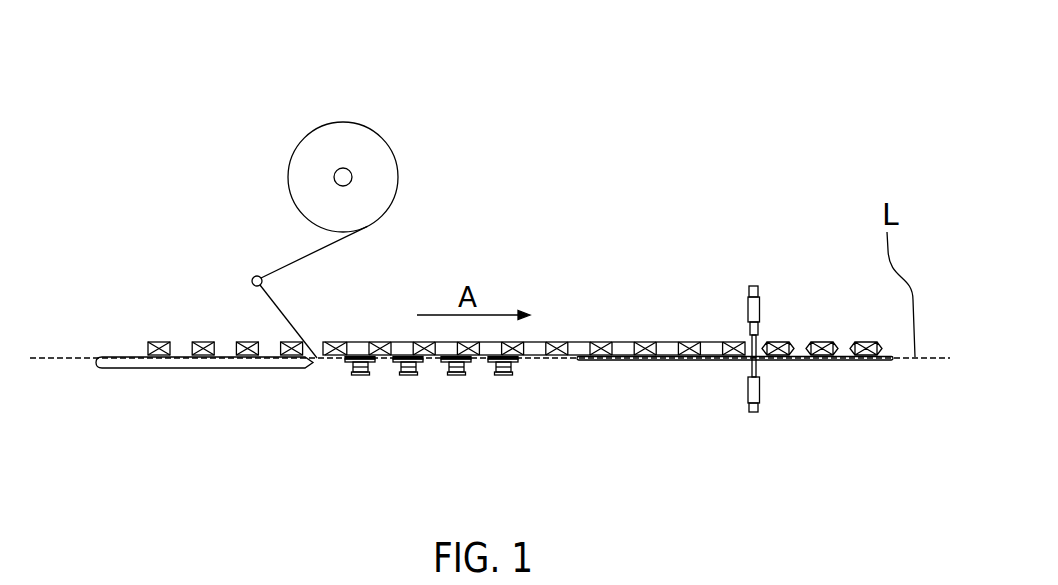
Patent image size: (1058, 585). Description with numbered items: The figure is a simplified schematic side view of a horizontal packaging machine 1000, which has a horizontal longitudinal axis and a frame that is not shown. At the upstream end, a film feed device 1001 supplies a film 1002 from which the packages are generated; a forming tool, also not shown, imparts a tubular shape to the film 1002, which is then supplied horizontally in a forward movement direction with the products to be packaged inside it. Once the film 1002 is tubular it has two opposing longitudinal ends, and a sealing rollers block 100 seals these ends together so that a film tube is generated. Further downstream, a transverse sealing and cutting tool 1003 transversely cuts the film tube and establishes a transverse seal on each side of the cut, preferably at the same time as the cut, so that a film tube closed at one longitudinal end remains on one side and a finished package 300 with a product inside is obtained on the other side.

The horizontal packaging machine 1000 is at (210, 158).
The film feed device 1001 is at (352, 177).
The film 1002 is at (277, 313).
The transverse sealing and cutting tool 1003 is at (744, 310).
The sealing rollers block 100 is at (522, 370).
The package 300 is at (780, 333).